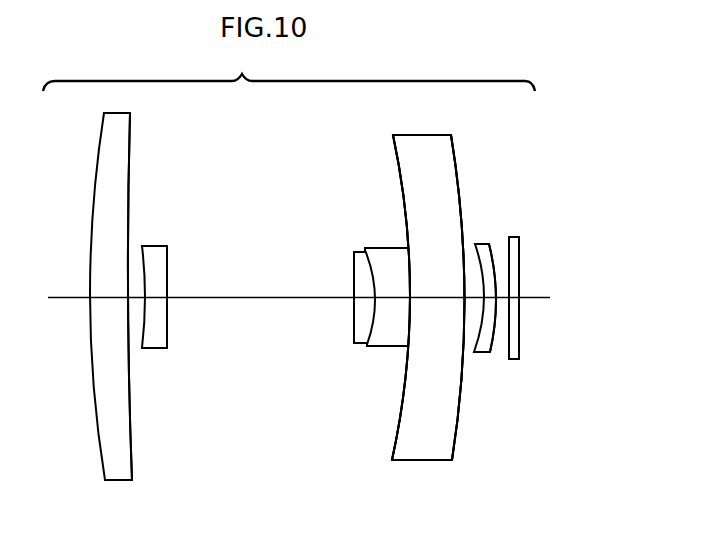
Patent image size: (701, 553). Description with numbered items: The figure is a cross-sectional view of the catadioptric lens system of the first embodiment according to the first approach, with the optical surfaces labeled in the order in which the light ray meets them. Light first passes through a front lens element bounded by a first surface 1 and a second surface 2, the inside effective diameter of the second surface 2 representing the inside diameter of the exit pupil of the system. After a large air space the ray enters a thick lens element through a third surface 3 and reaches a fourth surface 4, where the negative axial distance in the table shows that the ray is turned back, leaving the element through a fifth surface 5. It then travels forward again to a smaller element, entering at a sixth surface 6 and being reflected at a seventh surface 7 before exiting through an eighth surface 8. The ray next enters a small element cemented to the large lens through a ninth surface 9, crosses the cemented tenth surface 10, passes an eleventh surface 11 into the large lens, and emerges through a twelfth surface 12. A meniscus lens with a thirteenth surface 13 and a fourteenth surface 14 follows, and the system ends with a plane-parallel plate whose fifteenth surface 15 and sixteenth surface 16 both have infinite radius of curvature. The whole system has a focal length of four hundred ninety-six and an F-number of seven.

The first surface 1 is at (100, 138).
The second surface 2 is at (130, 142).
The third surface 3 is at (397, 156).
The fourth surface 4 is at (454, 153).
The fifth surface 5 is at (403, 197).
The sixth surface 6 is at (168, 253).
The seventh surface 7 is at (143, 255).
The eighth surface 8 is at (167, 338).
The ninth surface 9 is at (354, 318).
The tenth surface 10 is at (372, 326).
The eleventh surface 11 is at (403, 397).
The twelfth surface 12 is at (459, 403).
The thirteenth surface 13 is at (475, 246).
The fourteenth surface 14 is at (490, 246).
The fifteenth surface 15 is at (509, 352).
The sixteenth surface 16 is at (520, 345).